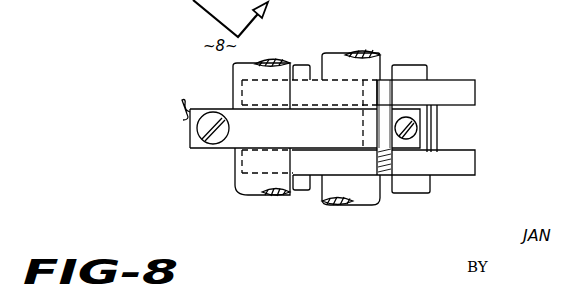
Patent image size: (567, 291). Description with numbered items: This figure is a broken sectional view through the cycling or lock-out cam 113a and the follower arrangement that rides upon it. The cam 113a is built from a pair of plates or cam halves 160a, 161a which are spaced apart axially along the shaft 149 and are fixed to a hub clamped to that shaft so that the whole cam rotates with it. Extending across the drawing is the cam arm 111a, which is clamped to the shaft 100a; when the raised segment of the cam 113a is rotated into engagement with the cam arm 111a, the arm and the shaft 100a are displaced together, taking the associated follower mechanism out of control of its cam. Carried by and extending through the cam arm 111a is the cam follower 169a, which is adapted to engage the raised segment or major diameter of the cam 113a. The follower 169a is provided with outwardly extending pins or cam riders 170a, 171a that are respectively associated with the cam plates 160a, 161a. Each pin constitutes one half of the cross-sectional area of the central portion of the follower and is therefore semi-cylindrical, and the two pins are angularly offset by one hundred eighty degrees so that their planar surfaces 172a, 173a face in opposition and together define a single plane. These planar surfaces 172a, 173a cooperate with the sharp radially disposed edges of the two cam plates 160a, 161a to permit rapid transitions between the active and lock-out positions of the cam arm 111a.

The shaft 100a is at (241, 186).
The cam arm 111a is at (165, 107).
The cycling cam 113a is at (455, 130).
The shaft 149 is at (336, 206).
The cam plate 160a is at (442, 88).
The cam plate 161a is at (476, 169).
The cam follower 169a is at (360, 80).
The cam rider pin 170a is at (380, 93).
The cam rider pin 171a is at (392, 156).
The planar surface 172a is at (397, 80).
The planar surface 173a is at (386, 155).